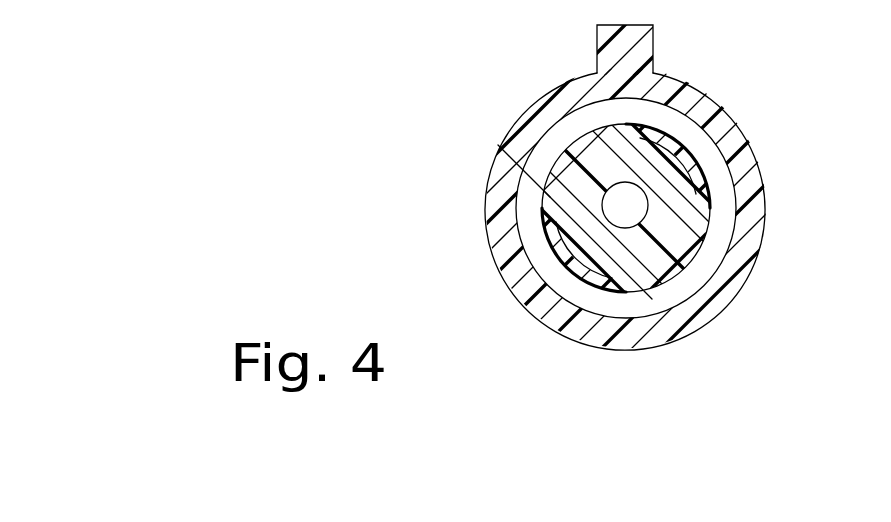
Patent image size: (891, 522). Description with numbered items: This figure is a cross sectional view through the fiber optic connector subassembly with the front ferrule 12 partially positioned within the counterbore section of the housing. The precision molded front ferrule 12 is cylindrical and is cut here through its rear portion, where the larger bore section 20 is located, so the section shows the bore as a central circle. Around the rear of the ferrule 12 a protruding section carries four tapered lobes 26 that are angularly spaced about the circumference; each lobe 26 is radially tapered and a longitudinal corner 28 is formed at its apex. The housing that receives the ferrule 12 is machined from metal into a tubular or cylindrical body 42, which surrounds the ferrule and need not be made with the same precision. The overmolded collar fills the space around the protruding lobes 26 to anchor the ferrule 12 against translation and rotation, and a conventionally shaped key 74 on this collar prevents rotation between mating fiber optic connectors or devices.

The front ferrule 12 is at (594, 160).
The larger bore section 20 is at (623, 203).
The tapered lobes 26 is at (630, 273).
The longitudinal corner 28 is at (623, 123).
The cylindrical body 42 is at (702, 268).
The key 74 is at (623, 37).